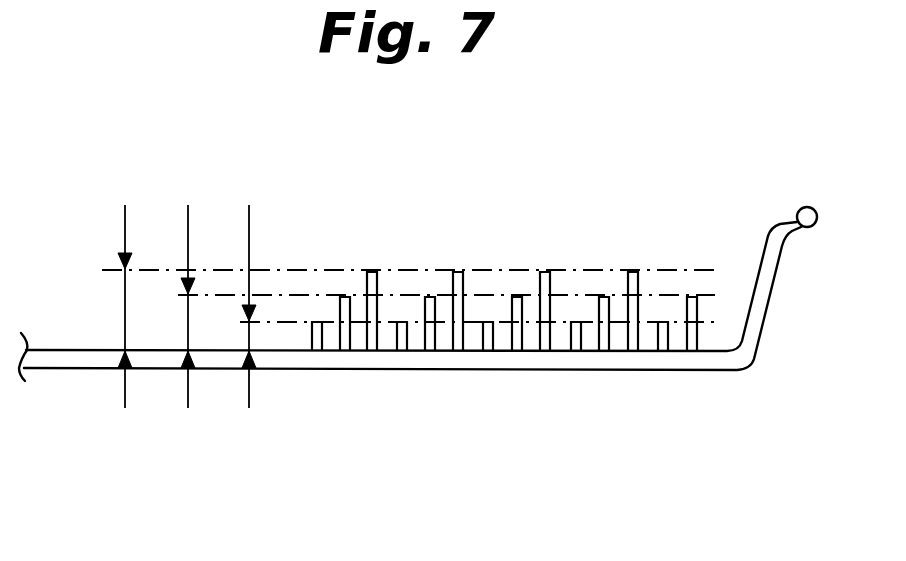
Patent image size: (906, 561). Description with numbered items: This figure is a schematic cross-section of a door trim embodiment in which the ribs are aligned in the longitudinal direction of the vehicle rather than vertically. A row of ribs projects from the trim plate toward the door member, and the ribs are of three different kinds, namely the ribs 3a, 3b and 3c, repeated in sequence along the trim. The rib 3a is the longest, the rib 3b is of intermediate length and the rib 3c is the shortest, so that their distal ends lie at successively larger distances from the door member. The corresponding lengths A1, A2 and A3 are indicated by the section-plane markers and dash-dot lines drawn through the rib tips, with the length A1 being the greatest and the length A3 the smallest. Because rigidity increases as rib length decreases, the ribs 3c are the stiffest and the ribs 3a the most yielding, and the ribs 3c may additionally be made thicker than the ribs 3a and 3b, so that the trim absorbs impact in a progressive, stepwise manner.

The length of rib 3a A1 is at (125, 218).
The length of rib 3b A2 is at (188, 218).
The length of rib 3c A3 is at (249, 218).
The rib 3a is at (375, 271).
The rib 3b is at (341, 296).
The rib 3c is at (313, 321).